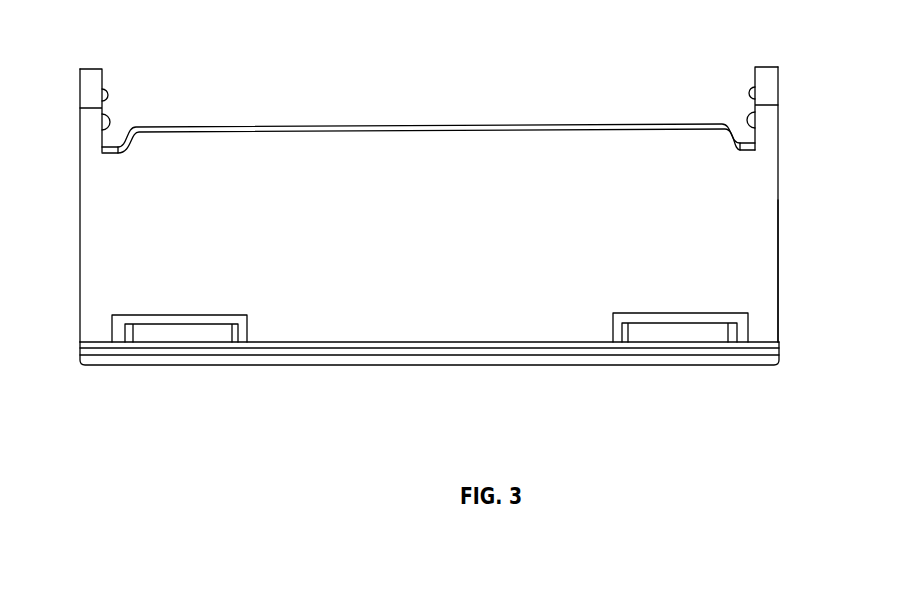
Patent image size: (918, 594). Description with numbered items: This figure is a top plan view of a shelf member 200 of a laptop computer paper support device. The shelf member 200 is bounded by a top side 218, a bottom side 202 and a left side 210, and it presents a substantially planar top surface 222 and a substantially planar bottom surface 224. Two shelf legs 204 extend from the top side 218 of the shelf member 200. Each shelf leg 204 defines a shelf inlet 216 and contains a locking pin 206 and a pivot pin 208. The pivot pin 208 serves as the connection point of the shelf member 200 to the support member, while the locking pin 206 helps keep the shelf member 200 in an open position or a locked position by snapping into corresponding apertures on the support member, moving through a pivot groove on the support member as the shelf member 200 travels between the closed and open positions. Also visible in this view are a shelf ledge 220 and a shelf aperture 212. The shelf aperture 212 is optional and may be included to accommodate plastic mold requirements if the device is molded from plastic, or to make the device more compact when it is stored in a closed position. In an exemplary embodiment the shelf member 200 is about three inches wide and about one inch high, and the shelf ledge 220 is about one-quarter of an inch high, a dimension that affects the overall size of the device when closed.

The shelf member 200 is at (437, 213).
The bottom side 202 is at (437, 342).
The shelf leg 204 is at (87, 82).
The locking pin 206 is at (112, 102).
The pivot pin 208 is at (115, 123).
The left side 210 is at (82, 252).
The shelf aperture 212 is at (213, 313).
The shelf inlet 216 is at (113, 157).
The top side 218 is at (387, 125).
The shelf ledge 220 is at (445, 355).
The top surface 222 is at (458, 234).
The bottom surface 224 is at (752, 202).